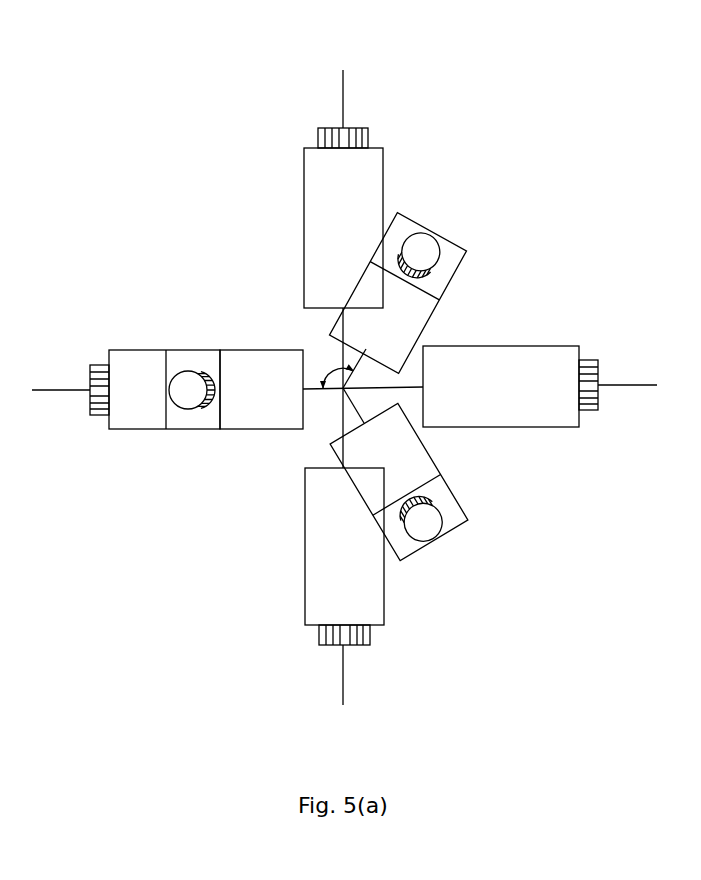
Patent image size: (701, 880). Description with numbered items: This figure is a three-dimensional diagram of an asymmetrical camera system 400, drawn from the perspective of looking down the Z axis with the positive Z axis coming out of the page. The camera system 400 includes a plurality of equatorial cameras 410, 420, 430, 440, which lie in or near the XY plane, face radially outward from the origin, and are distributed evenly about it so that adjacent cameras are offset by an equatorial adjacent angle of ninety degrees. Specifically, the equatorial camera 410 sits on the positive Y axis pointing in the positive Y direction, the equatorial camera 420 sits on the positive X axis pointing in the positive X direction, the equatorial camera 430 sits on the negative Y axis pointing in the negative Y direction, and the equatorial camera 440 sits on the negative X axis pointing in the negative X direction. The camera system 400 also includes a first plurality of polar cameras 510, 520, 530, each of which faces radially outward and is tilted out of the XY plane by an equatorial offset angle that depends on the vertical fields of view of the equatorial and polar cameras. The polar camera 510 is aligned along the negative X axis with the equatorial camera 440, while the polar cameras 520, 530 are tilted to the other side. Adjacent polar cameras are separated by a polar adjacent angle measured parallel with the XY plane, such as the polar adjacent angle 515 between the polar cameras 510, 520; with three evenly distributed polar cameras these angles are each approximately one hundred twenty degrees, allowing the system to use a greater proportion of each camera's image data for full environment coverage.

The camera system 400 is at (448, 80).
The equatorial camera 410 is at (365, 212).
The equatorial camera 420 is at (460, 399).
The equatorial camera 430 is at (367, 568).
The equatorial camera 440 is at (116, 390).
The polar camera 510 is at (283, 400).
The polar adjacent angle 515 is at (334, 372).
The polar camera 520 is at (362, 335).
The polar camera 530 is at (362, 479).